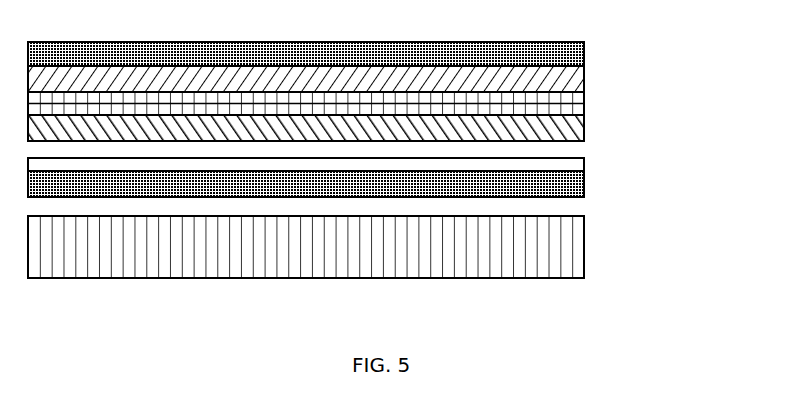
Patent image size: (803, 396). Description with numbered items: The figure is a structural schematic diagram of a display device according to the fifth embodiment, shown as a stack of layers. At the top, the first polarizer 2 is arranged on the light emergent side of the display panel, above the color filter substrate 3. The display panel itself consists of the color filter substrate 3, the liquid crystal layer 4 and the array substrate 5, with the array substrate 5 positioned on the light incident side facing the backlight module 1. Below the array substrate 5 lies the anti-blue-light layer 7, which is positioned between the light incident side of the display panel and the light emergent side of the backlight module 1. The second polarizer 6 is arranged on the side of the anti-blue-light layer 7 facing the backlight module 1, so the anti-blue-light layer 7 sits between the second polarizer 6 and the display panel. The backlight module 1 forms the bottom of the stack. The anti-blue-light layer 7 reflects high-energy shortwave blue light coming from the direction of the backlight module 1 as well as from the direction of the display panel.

The backlight module 1 is at (496, 253).
The first polarizer 2 is at (483, 53).
The color filter substrate 3 is at (483, 79).
The liquid crystal layer 4 is at (483, 103).
The array substrate 5 is at (584, 128).
The second polarizer 6 is at (483, 185).
The anti-blue-light layer 7 is at (483, 164).